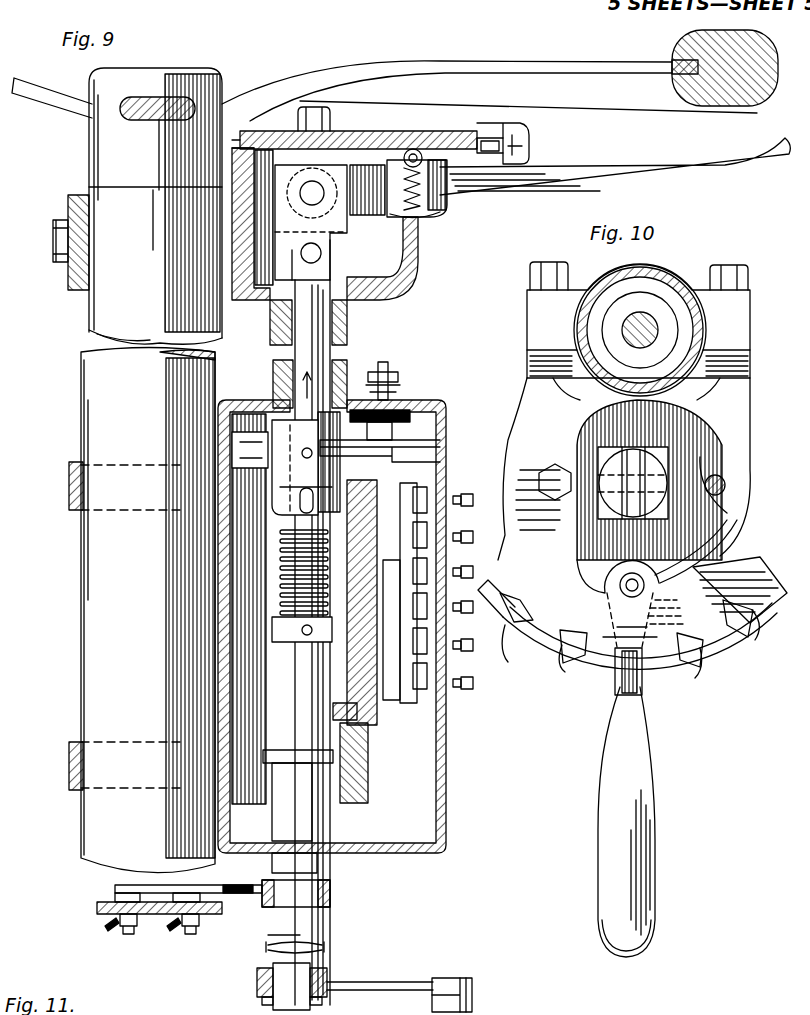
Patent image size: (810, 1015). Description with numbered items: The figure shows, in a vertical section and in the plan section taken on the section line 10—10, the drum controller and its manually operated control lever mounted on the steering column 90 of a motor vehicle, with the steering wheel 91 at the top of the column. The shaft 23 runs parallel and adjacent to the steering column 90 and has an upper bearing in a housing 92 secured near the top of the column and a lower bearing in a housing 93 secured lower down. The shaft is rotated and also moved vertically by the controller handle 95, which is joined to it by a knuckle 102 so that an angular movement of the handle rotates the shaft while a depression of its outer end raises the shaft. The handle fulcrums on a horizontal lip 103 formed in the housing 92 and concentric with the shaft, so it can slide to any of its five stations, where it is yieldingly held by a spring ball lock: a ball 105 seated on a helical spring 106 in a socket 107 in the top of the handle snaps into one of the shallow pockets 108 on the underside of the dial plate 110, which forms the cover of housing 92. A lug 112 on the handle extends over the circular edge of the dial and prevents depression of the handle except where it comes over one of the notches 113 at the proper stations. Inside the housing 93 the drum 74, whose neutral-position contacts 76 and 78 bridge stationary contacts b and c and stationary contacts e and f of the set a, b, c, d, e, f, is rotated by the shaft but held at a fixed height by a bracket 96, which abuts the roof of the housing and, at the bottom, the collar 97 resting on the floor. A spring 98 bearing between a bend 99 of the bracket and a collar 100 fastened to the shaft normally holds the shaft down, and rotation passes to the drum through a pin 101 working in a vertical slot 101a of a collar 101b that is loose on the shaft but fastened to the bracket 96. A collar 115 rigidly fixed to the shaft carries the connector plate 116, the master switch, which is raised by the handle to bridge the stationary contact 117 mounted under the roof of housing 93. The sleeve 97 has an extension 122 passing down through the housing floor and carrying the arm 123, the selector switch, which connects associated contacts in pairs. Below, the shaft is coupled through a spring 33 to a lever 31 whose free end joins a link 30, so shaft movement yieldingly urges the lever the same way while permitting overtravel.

In FIG. 9, the section line 10 is at (232, 137).
In FIG. 9, the shaft 23 is at (340, 348).
In FIG. 9, the link 30 is at (473, 1003).
In FIG. 9, the lever 31 is at (386, 976).
In FIG. 9, the spring 33 is at (323, 946).
In FIG. 9, the drum 74 is at (352, 803).
In FIG. 9, the contact 76 is at (396, 528).
In FIG. 9, the contact 78 is at (400, 700).
In FIG. 9, the steering column 90 is at (92, 593).
In FIG. 10, the steering column 90 is at (700, 322).
In FIG. 9, the steering wheel 91 is at (419, 70).
In FIG. 10, the housing 92 is at (745, 486).
In FIG. 9, the housing 93 is at (448, 433).
In FIG. 9, the controller handle 95 is at (727, 152).
In FIG. 10, the controller handle 95 is at (637, 750).
In FIG. 9, the bracket 96 is at (338, 678).
In FIG. 9, the collar 97 is at (284, 824).
In FIG. 9, the spring 98 is at (284, 582).
In FIG. 9, the bend 99 is at (250, 542).
In FIG. 9, the collar 100 is at (292, 650).
In FIG. 9, the pin 101 is at (300, 512).
In FIG. 9, the vertical slot 101a is at (300, 505).
In FIG. 9, the collar 101b is at (292, 488).
In FIG. 9, the knuckle 102 is at (334, 217).
In FIG. 10, the knuckle 102 is at (667, 457).
In FIG. 9, the lip 103 is at (415, 226).
In FIG. 10, the lip 103 is at (720, 534).
In FIG. 9, the ball 105 is at (424, 152).
In FIG. 10, the ball 105 is at (642, 578).
In FIG. 9, the helical spring 106 is at (437, 180).
In FIG. 9, the socket 107 is at (447, 204).
In FIG. 9, the shallow pockets 108 is at (414, 148).
In FIG. 9, the dial plate 110 is at (352, 141).
In FIG. 10, the dial plate 110 is at (717, 637).
In FIG. 9, the lug 112 is at (525, 133).
In FIG. 10, the lug 112 is at (627, 677).
In FIG. 9, the notches 113 is at (522, 147).
In FIG. 10, the notches 113 is at (600, 667).
In FIG. 9, the collar 115 is at (282, 432).
In FIG. 9, the connector plate 116 is at (442, 440).
In FIG. 9, the contact 117 is at (395, 432).
In FIG. 9, the extension 122 is at (320, 882).
In FIG. 9, the arm 123 is at (253, 897).
In FIG. 9, the stationary contact a is at (428, 497).
In FIG. 9, the stationary contact b is at (428, 537).
In FIG. 9, the stationary contact c is at (428, 572).
In FIG. 9, the stationary contact d is at (428, 607).
In FIG. 9, the stationary contact e is at (428, 645).
In FIG. 9, the stationary contact f is at (428, 683).